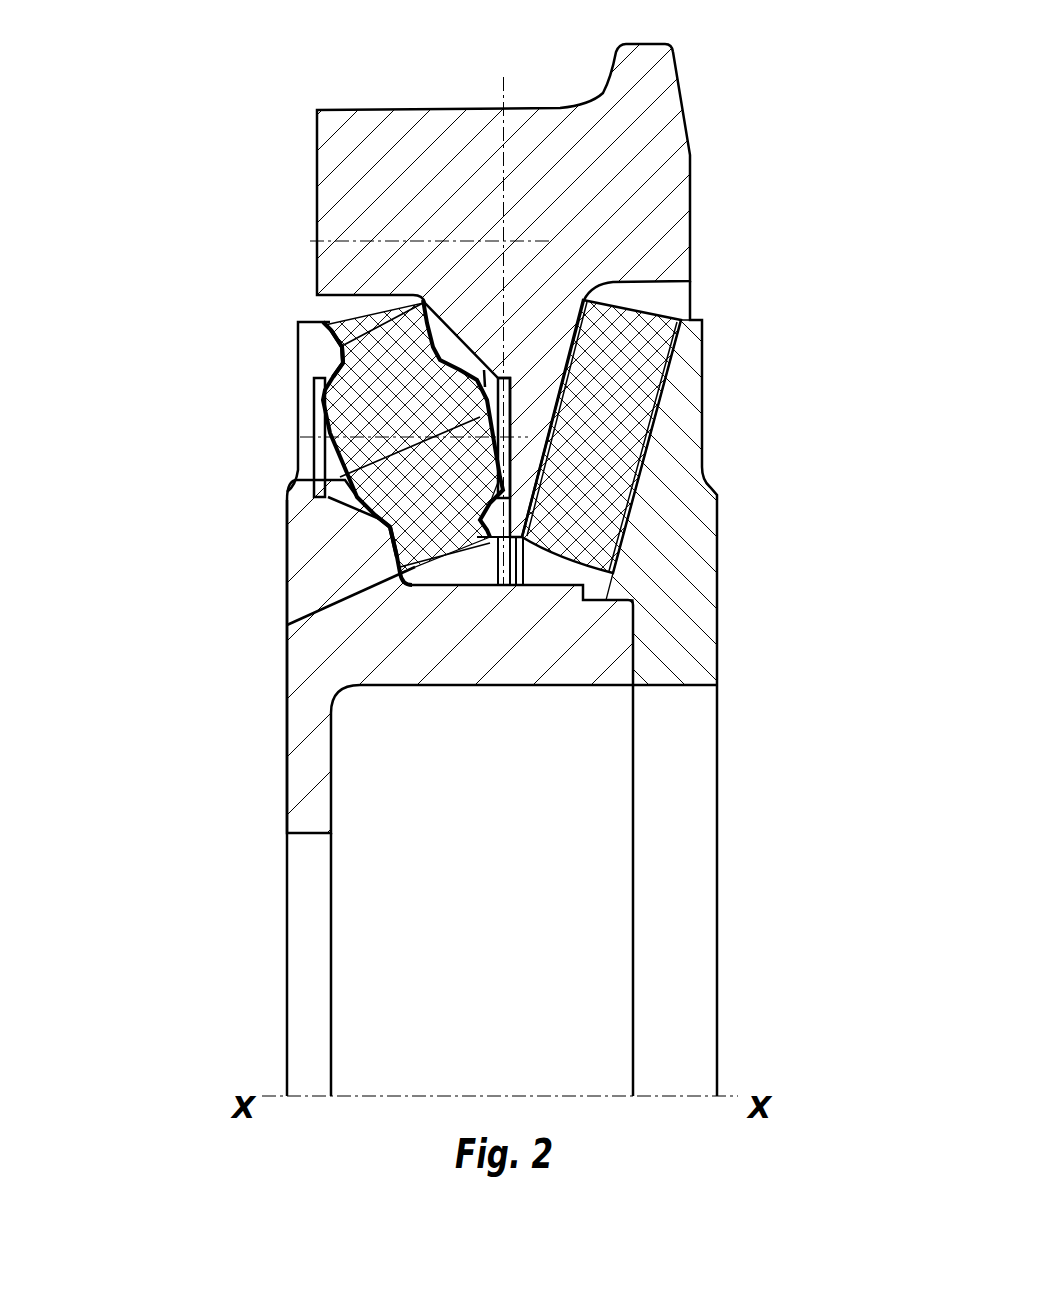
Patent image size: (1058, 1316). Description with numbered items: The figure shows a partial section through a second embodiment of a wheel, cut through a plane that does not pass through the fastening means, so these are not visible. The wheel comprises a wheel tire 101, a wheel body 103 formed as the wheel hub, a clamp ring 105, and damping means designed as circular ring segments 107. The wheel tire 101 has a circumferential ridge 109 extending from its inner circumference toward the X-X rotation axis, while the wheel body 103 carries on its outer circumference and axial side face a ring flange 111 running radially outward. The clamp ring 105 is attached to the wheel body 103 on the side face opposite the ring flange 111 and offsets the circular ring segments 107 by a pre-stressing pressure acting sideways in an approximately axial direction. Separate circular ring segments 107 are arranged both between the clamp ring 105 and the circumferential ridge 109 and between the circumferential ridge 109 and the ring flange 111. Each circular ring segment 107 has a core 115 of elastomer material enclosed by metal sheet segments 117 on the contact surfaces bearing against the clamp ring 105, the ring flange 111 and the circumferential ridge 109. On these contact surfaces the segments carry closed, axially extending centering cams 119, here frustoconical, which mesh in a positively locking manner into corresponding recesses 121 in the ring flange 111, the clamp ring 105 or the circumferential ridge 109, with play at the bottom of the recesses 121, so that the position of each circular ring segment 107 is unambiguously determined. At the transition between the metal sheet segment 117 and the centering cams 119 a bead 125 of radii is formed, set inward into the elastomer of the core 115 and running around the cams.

The wheel tire 101 is at (407, 138).
The wheel body 103 is at (370, 660).
The clamp ring 105 is at (678, 603).
The circular ring segment 107 is at (380, 333).
The circumferential ridge 109 is at (530, 352).
The ring flange 111 is at (305, 365).
The core 115 is at (392, 553).
The metal sheet segment 117 is at (647, 447).
The centering cam 119 is at (325, 413).
The recess 121 is at (497, 377).
The bead 125 is at (336, 352).